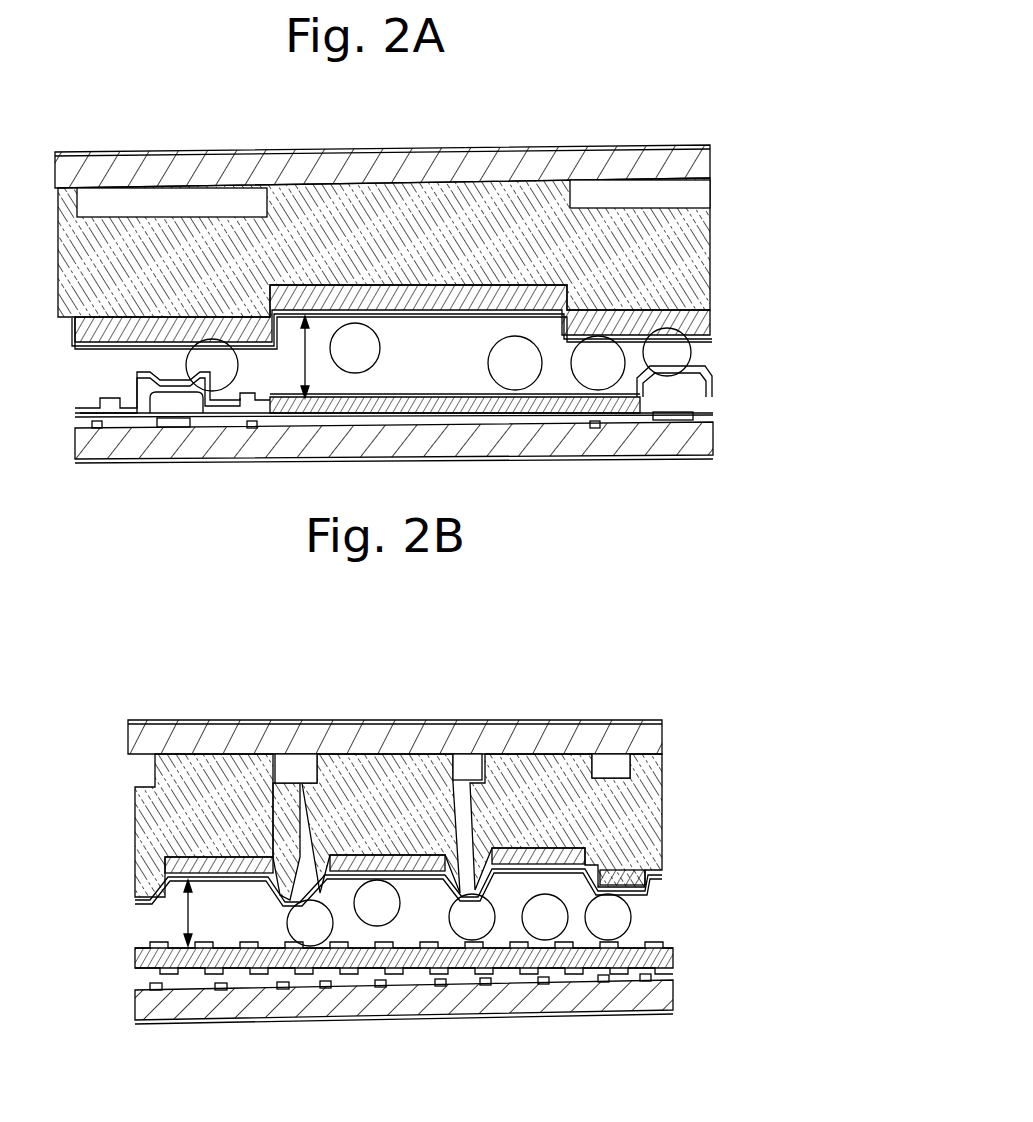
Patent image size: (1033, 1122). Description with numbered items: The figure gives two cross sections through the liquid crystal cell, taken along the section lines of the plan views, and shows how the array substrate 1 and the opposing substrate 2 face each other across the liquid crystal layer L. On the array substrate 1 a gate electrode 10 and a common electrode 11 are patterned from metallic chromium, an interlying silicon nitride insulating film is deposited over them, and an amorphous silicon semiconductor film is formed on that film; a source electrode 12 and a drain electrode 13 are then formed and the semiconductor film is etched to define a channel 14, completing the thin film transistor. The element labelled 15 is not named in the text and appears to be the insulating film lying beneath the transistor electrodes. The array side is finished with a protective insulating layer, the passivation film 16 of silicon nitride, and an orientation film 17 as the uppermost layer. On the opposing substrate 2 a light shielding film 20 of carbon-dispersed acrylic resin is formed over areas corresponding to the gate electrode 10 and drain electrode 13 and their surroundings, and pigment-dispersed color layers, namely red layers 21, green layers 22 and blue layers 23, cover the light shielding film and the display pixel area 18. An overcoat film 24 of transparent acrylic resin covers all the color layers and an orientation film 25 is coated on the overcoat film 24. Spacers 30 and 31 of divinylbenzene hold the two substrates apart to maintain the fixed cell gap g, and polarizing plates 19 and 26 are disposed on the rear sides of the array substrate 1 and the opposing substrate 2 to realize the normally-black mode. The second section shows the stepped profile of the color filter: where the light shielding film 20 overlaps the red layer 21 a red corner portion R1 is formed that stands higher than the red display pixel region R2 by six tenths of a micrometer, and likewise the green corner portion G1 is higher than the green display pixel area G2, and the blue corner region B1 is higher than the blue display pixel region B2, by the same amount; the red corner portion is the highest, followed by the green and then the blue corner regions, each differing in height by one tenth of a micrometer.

In FIG. 2A, the array substrate 1 is at (678, 442).
In FIG. 2B, the array substrate 1 is at (660, 994).
In FIG. 2A, the opposing substrate 2 is at (634, 166).
In FIG. 2B, the opposing substrate 2 is at (635, 735).
In FIG. 2A, the gate electrode 10 is at (173, 428).
In FIG. 2A, the common electrode 11 is at (251, 430).
In FIG. 2B, the common electrode 11 is at (326, 990).
In FIG. 2B, the wiring 12 is at (262, 970).
In FIG. 2B, the drain electrode 13 is at (198, 975).
In FIG. 2A, the channel 14 is at (96, 430).
In FIG. 2A, the insulating film 15 is at (712, 424).
In FIG. 2B, the insulating film 15 is at (667, 970).
In FIG. 2A, the protective insulating layer (passivation film) 16 is at (712, 396).
In FIG. 2B, the protective insulating layer (passivation film) 16 is at (655, 950).
In FIG. 2A, the orientation film 17 is at (712, 372).
In FIG. 2B, the orientation film 17 is at (635, 946).
In FIG. 2B, the display pixel area 18 is at (250, 890).
In FIG. 2A, the polarizing plate 19 is at (672, 422).
In FIG. 2B, the polarizing plate 19 is at (163, 1024).
In FIG. 2A, the light shielding film 20 is at (590, 194).
In FIG. 2B, the light shielding film 20 is at (632, 764).
In FIG. 2A, the red layer 21 is at (690, 228).
In FIG. 2B, the red layer 21 is at (240, 830).
In FIG. 2B, the green layer 22 is at (340, 790).
In FIG. 2B, the blue layer 23 is at (527, 845).
In FIG. 2A, the overcoat film 24 is at (710, 300).
In FIG. 2B, the overcoat film 24 is at (605, 845).
In FIG. 2A, the orientation film 25 is at (712, 338).
In FIG. 2B, the orientation film 25 is at (652, 880).
In FIG. 2A, the polarizing plate 26 is at (326, 150).
In FIG. 2B, the polarizing plate 26 is at (170, 721).
In FIG. 2A, the spacer 30 is at (357, 346).
In FIG. 2B, the spacer 30 is at (550, 922).
In FIG. 2A, the spacer 31 is at (600, 388).
In FIG. 2B, the spacer 31 is at (612, 924).
In FIG. 2A, the cell gap g is at (293, 357).
In FIG. 2B, the cell gap g is at (188, 955).
In FIG. 2A, the liquid crystal layer L is at (442, 376).
In FIG. 2B, the liquid crystal layer L is at (432, 931).
In FIG. 2A, the red corner portion R1 is at (180, 330).
In FIG. 2B, the red corner portion R1 is at (277, 880).
In FIG. 2A, the red display pixel region R2 is at (482, 302).
In FIG. 2B, the red display pixel region R2 is at (206, 882).
In FIG. 2B, the green corner portion G1 is at (445, 878).
In FIG. 2B, the green display pixel area G2 is at (387, 872).
In FIG. 2B, the blue corner region B1 is at (605, 870).
In FIG. 2B, the blue display pixel region B2 is at (556, 865).